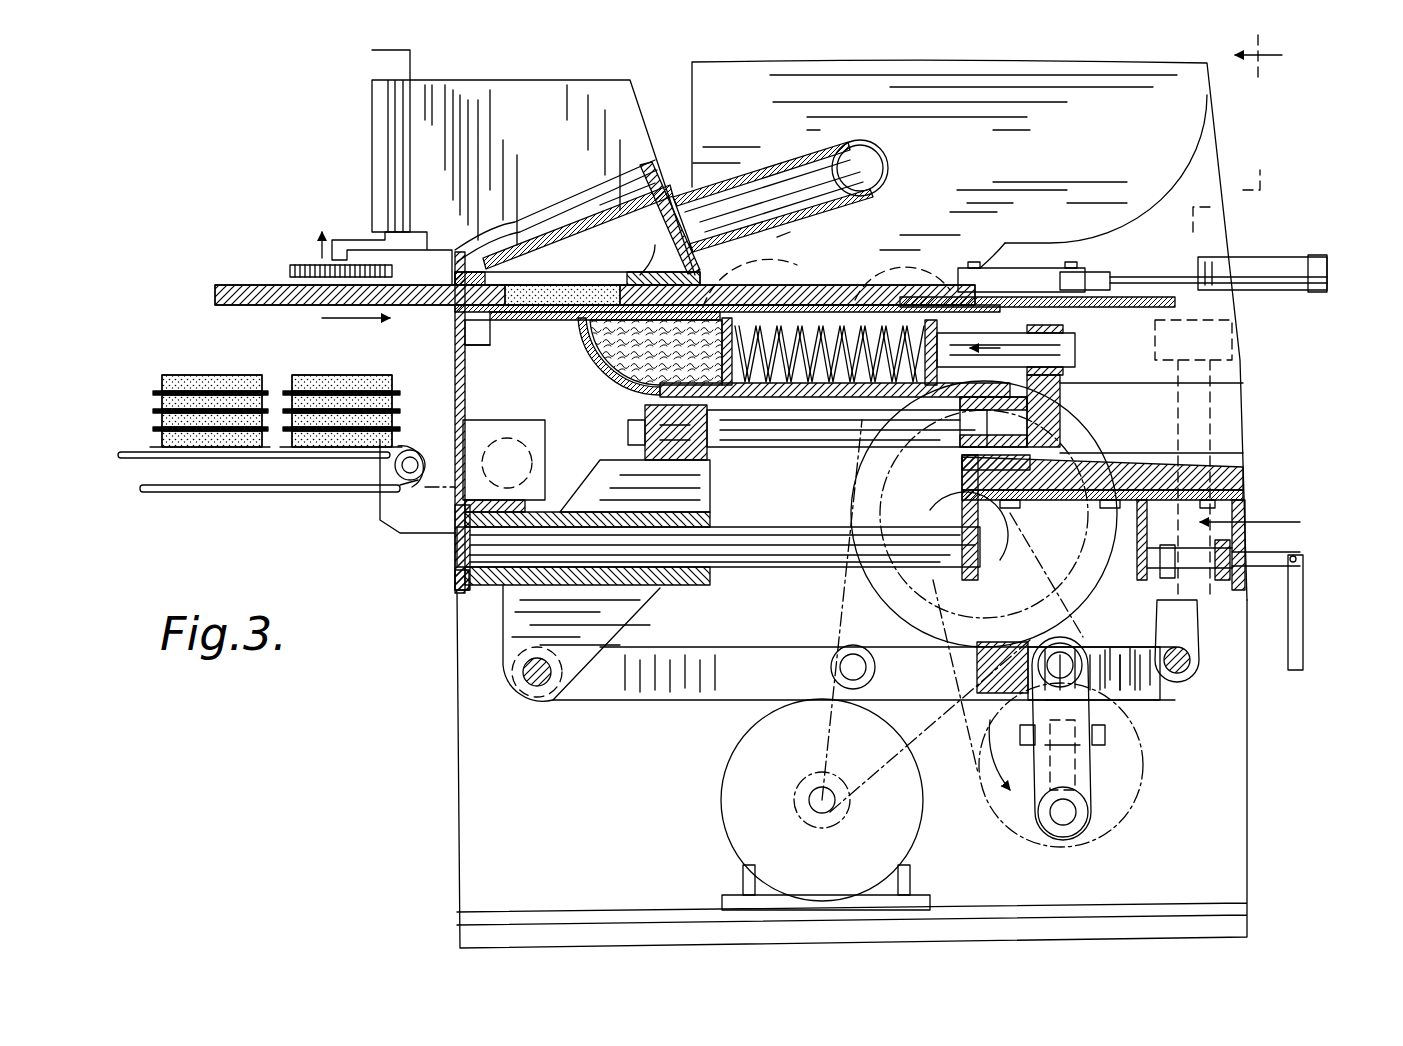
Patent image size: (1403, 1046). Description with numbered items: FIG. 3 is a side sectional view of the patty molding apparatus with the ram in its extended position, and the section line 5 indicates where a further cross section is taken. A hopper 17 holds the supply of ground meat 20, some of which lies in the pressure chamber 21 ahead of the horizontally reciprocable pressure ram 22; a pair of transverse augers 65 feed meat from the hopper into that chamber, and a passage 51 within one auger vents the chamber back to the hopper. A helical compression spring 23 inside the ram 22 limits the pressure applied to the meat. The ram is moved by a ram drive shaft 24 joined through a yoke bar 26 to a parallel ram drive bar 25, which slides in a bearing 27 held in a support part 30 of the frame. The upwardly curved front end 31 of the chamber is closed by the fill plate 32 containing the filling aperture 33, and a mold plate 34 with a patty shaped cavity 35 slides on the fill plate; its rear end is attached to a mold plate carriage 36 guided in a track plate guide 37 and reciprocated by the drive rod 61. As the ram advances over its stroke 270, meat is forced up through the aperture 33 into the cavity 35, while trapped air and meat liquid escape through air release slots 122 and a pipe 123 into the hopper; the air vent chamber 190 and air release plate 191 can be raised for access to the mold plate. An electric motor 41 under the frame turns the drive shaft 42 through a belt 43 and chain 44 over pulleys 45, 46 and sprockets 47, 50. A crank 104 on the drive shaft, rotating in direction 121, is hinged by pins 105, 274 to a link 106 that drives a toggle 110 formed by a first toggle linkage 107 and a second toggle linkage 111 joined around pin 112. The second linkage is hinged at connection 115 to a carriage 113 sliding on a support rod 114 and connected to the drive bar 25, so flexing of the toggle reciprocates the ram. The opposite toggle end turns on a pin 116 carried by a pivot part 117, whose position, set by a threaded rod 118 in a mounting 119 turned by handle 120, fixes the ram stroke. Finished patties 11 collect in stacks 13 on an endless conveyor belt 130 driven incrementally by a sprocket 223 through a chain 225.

The section line 5- 5 is at (1261, 285).
The flat patties 11 is at (577, 217).
The stacks of patties 13 is at (305, 372).
The hopper 17 is at (976, 330).
The ground meat 20 is at (620, 382).
The pressure chamber 21 is at (635, 405).
The pressure ram 22 is at (860, 290).
The helical compression spring 23 is at (915, 320).
The ram drive shaft 24 is at (1075, 352).
The ram drive bar 25 is at (770, 430).
The yoke bar 26 is at (1062, 400).
The bearing 27 is at (960, 458).
The support part 30 is at (1115, 468).
The upwardly curved front end 31 is at (590, 358).
The fill plate 32 is at (656, 352).
The filling aperture 33 is at (585, 335).
The mold plate 34 is at (440, 300).
The patty shaped cavity 35 is at (540, 292).
The mold plate carriage 36 is at (1025, 268).
The track plate guide 37 is at (1090, 310).
The electric motor 41 is at (745, 848).
The drive shaft 42 is at (1055, 774).
The belt 43 is at (830, 627).
The chain 44 is at (1040, 560).
The pulley 45 is at (832, 775).
The pulley 46 is at (850, 505).
The sprocket 47 is at (935, 507).
The sprocket 50 is at (1140, 765).
The internal passage 51 is at (800, 300).
The drive rod 61 is at (1130, 275).
The augers 65 is at (925, 210).
The crank 104 is at (1100, 790).
The hinge pin 105 is at (1075, 650).
The link 106 is at (950, 705).
The first toggle linkage 107 is at (1165, 690).
The toggle 110 is at (1002, 640).
The second toggle linkage 111 is at (705, 648).
The pin 112 is at (840, 668).
The carriage 113 is at (517, 628).
The support rod 114 is at (762, 560).
The hinge connection 115 is at (540, 690).
The pin 116 is at (1178, 675).
The pivot part 117 is at (1189, 611).
The threaded rod 118 is at (1290, 552).
The mounting 119 is at (1250, 495).
The handle 120 is at (1305, 645).
The direction of rotation 121 is at (959, 708).
The air release slots 122 is at (622, 261).
The pipe 123 is at (750, 168).
The endless conveyor belt 130 is at (290, 487).
The air vent chamber 190 is at (580, 205).
The air release plate 191 is at (635, 212).
The sprocket 223 is at (495, 428).
The chain 225 is at (450, 420).
The stroke 270 is at (935, 432).
The hinge pin 274 is at (1068, 830).